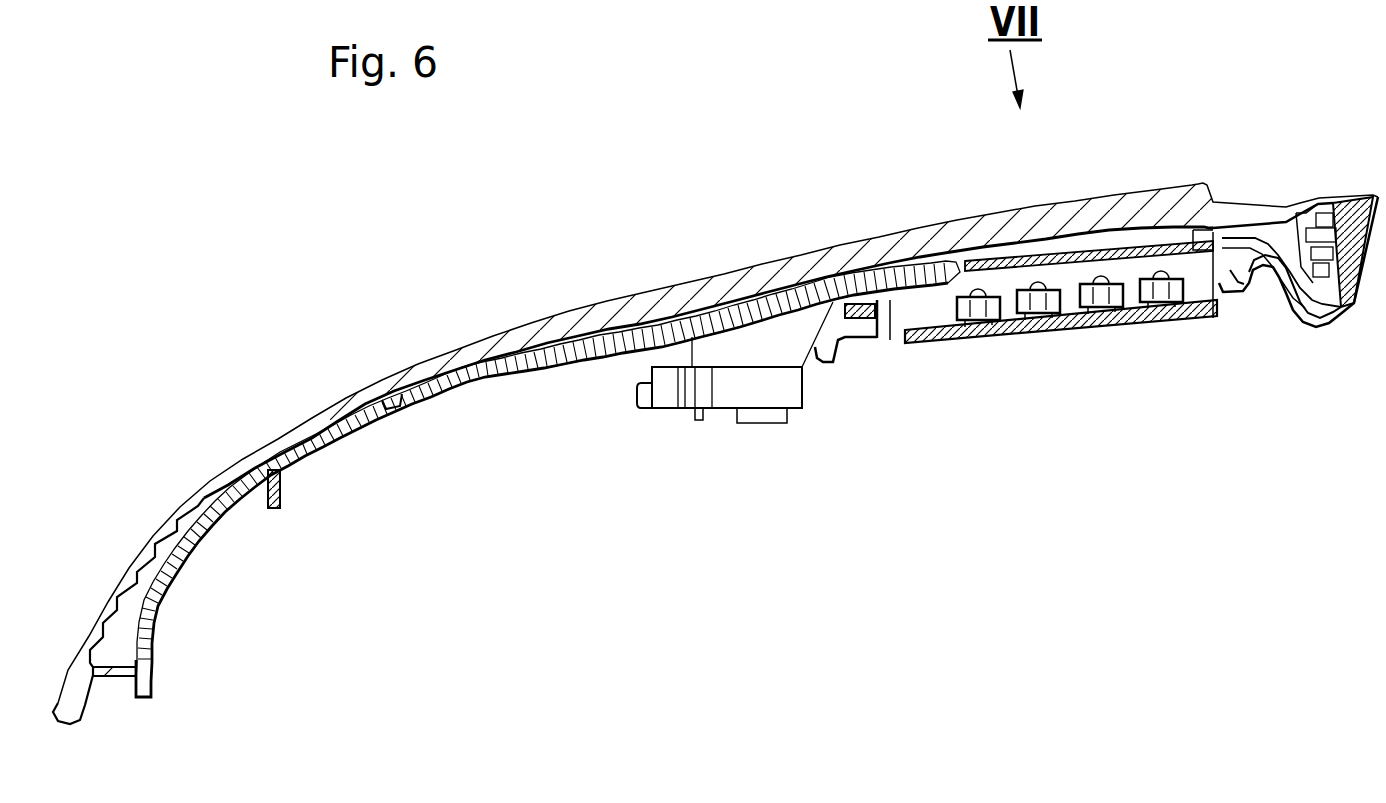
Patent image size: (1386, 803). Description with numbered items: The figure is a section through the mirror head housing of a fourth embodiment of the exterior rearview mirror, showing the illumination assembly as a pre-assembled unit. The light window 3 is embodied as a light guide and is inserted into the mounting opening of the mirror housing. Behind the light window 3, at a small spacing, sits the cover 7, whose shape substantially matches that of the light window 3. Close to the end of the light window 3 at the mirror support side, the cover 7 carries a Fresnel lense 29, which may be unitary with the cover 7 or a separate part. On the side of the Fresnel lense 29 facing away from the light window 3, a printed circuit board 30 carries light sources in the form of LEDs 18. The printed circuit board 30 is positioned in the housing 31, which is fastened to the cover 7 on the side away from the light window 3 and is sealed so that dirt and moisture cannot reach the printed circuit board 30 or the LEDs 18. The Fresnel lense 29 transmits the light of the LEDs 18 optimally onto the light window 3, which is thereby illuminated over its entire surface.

The light window 3 is at (626, 280).
The cover 7 is at (479, 403).
The LEDs 18 is at (1038, 289).
The Fresnel lense 29 is at (1148, 241).
The printed circuit board 30 is at (920, 352).
The housing 31 is at (1073, 325).